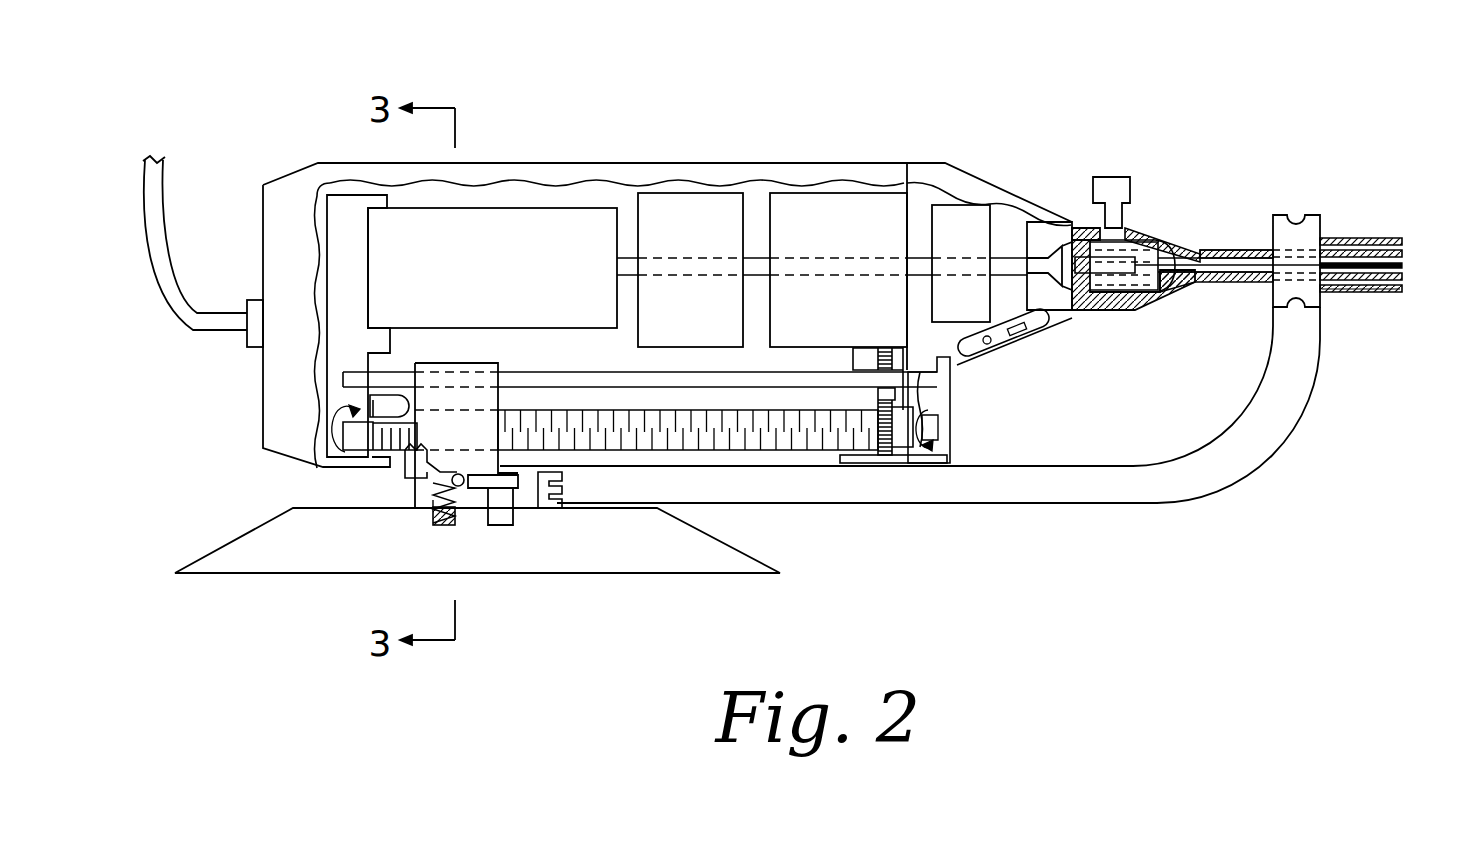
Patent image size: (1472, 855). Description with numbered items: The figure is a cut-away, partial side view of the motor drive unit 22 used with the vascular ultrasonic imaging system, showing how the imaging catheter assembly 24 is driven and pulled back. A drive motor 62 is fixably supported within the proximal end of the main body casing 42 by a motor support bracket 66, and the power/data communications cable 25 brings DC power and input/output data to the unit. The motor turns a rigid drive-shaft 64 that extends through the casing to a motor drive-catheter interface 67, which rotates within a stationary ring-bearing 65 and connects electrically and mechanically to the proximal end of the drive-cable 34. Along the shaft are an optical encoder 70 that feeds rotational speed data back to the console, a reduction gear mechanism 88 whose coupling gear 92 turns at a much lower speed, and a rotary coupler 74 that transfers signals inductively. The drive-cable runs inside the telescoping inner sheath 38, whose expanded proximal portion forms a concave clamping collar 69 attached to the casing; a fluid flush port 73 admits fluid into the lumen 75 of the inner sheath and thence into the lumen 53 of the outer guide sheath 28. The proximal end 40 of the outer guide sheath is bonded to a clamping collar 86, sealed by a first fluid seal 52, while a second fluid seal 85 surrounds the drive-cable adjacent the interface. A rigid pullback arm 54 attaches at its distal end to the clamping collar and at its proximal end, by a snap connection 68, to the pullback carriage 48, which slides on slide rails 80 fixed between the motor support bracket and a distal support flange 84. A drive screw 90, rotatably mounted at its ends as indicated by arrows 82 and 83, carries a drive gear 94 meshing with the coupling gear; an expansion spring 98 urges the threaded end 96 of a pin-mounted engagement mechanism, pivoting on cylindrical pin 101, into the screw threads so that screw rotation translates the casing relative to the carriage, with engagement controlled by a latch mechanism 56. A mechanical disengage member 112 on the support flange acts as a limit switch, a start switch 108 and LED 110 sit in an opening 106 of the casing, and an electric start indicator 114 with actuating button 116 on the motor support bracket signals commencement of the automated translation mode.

The motor drive unit 22 is at (662, 97).
The imaging catheter assembly 24 is at (1191, 232).
The power/data communications cable 25 is at (165, 280).
The outer guide sheath 28 is at (1366, 239).
The drive-cable 34 is at (1403, 267).
The inner sheath 38 is at (1224, 250).
The proximal end of the outer guide sheath 40 is at (1334, 314).
The main body casing 42 is at (565, 181).
The pullback carriage 48 is at (455, 400).
The first fluid seal 52 is at (1318, 240).
The lumen 53 is at (1403, 289).
The pullback arm 54 is at (1288, 440).
The latch mechanism 56 is at (505, 490).
The drive motor 62 is at (461, 275).
The drive-shaft 64 is at (748, 256).
The stationary ring-bearing 65 is at (1130, 302).
The motor support bracket 66 is at (348, 216).
The motor drive-catheter interface 67 is at (1102, 296).
The snap connection 68 is at (552, 505).
The concave clamping collar 69 is at (1064, 224).
The optical encoder 70 is at (693, 238).
The fluid flush port 73 is at (1115, 178).
The rotary coupler 74 is at (973, 245).
The lumen 75 is at (1210, 282).
The slide rail 80 is at (568, 378).
The arrow 82 is at (340, 452).
The arrow 83 is at (949, 438).
The support flange 84 is at (950, 394).
The second fluid seal 85 is at (1158, 238).
The clamping collar 86 is at (1318, 300).
The reduction gear mechanism 88 is at (853, 238).
The drive screw 90 is at (745, 452).
The coupling gear 92 is at (880, 346).
The drive gear 94 is at (893, 452).
The threaded end 96 is at (405, 478).
The expansion spring 98 is at (432, 517).
The cylindrical pin 101 is at (460, 487).
The opening 106 is at (1030, 336).
The start switch 108 is at (1004, 348).
The LED 110 is at (986, 346).
The mechanical disengage member 112 is at (857, 464).
The electric start indicator 114 is at (383, 411).
The actuating button 116 is at (406, 394).